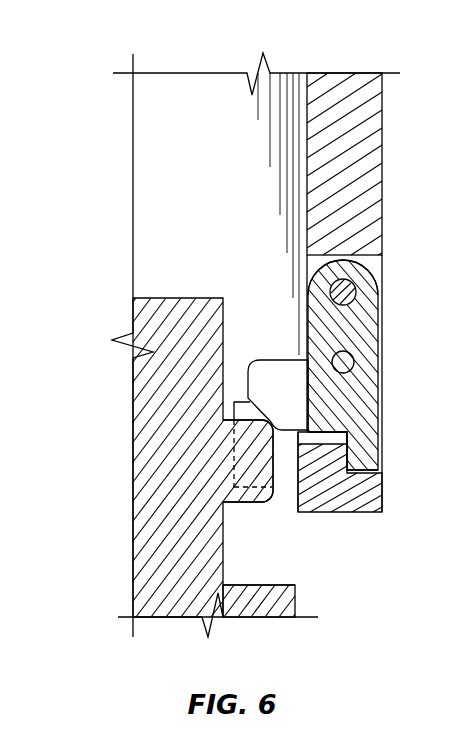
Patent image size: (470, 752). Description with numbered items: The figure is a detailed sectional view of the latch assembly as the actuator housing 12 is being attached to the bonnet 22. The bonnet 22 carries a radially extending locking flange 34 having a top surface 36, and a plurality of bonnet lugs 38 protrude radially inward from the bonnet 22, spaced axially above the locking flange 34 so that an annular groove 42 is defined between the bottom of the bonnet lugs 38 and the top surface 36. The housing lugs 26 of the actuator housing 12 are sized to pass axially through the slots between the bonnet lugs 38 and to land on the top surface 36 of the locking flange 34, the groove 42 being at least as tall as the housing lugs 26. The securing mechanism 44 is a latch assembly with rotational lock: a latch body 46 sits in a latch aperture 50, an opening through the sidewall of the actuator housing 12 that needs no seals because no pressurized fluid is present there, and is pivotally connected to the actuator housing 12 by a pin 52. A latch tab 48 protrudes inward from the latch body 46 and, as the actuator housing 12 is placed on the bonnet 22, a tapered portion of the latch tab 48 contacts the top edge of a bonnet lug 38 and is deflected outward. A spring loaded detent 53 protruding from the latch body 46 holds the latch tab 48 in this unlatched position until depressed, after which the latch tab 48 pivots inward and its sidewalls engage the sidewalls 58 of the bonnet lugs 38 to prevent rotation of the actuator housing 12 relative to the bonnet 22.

The actuator housing 12 is at (352, 108).
The bonnet 22 is at (163, 573).
The housing lugs 26 is at (287, 470).
The locking flange 34 is at (277, 608).
The top surface 36 is at (246, 585).
The bonnet lugs 38 is at (247, 507).
The groove 42 is at (238, 538).
The securing mechanism 44 is at (392, 341).
The latch body 46 is at (365, 435).
The latch tab 48 is at (276, 366).
The latch aperture 50 is at (372, 263).
The pin 52 is at (347, 293).
The detent 53 is at (357, 363).
The sidewalls 58 is at (258, 411).